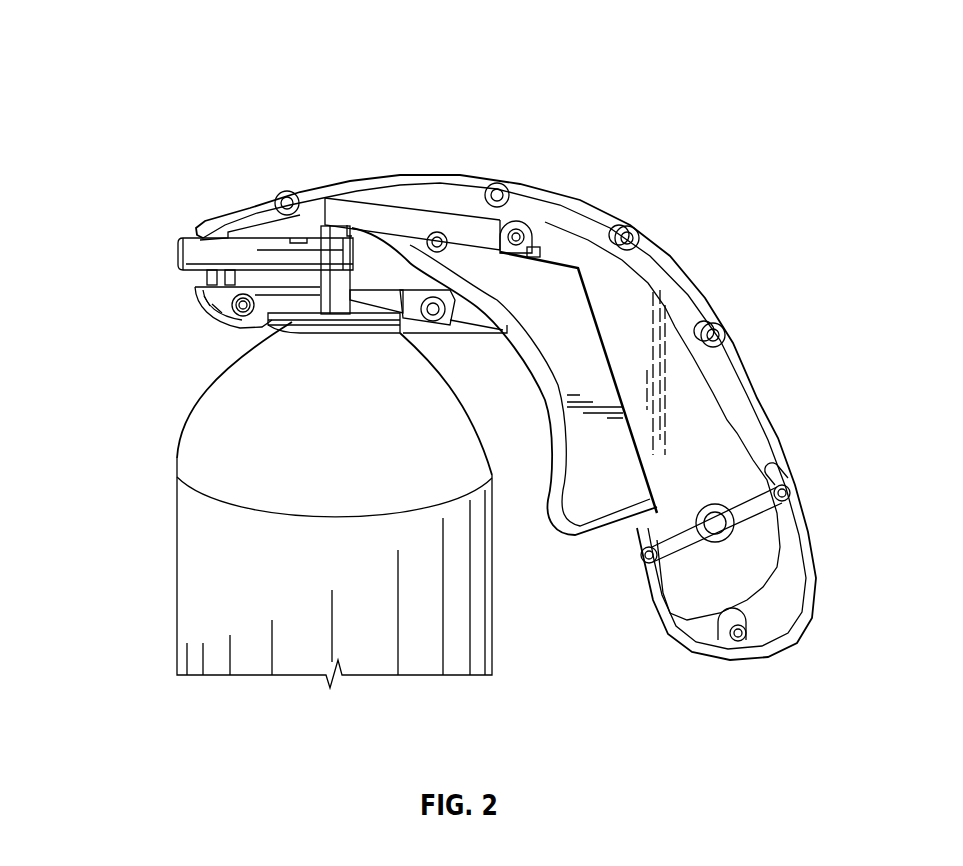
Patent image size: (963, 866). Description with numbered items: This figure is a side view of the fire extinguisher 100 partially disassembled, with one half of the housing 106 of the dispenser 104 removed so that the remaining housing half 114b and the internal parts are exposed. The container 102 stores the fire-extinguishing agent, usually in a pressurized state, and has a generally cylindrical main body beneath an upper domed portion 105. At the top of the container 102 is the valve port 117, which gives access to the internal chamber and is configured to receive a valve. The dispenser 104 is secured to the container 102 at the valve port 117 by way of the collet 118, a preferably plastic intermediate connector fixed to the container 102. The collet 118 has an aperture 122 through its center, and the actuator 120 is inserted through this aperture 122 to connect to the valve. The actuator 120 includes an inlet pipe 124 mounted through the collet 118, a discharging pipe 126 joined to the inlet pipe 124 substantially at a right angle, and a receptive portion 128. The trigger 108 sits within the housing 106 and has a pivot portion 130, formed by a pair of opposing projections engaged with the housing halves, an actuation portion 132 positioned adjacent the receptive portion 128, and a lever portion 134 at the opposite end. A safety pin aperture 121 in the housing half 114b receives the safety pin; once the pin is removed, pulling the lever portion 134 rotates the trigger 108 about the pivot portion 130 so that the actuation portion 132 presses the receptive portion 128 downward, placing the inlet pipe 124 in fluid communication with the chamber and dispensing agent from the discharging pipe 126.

The fire extinguisher 100 is at (124, 55).
The container 102 is at (172, 512).
The dispenser 104 is at (615, 202).
The upper domed portion 105 is at (172, 460).
The housing 106 is at (258, 196).
The trigger 108 is at (571, 548).
The housing half 114b is at (646, 243).
The valve port 117 is at (322, 340).
The collet 118 is at (272, 308).
The actuator 120 is at (246, 255).
The safety pin aperture 121 is at (518, 226).
The aperture 122 is at (350, 290).
The inlet pipe 124 is at (400, 335).
The discharging pipe 126 is at (178, 250).
The receptive portion 128 is at (364, 220).
The pivot portion 130 is at (438, 233).
The actuation portion 132 is at (358, 200).
The lever portion 134 is at (536, 298).